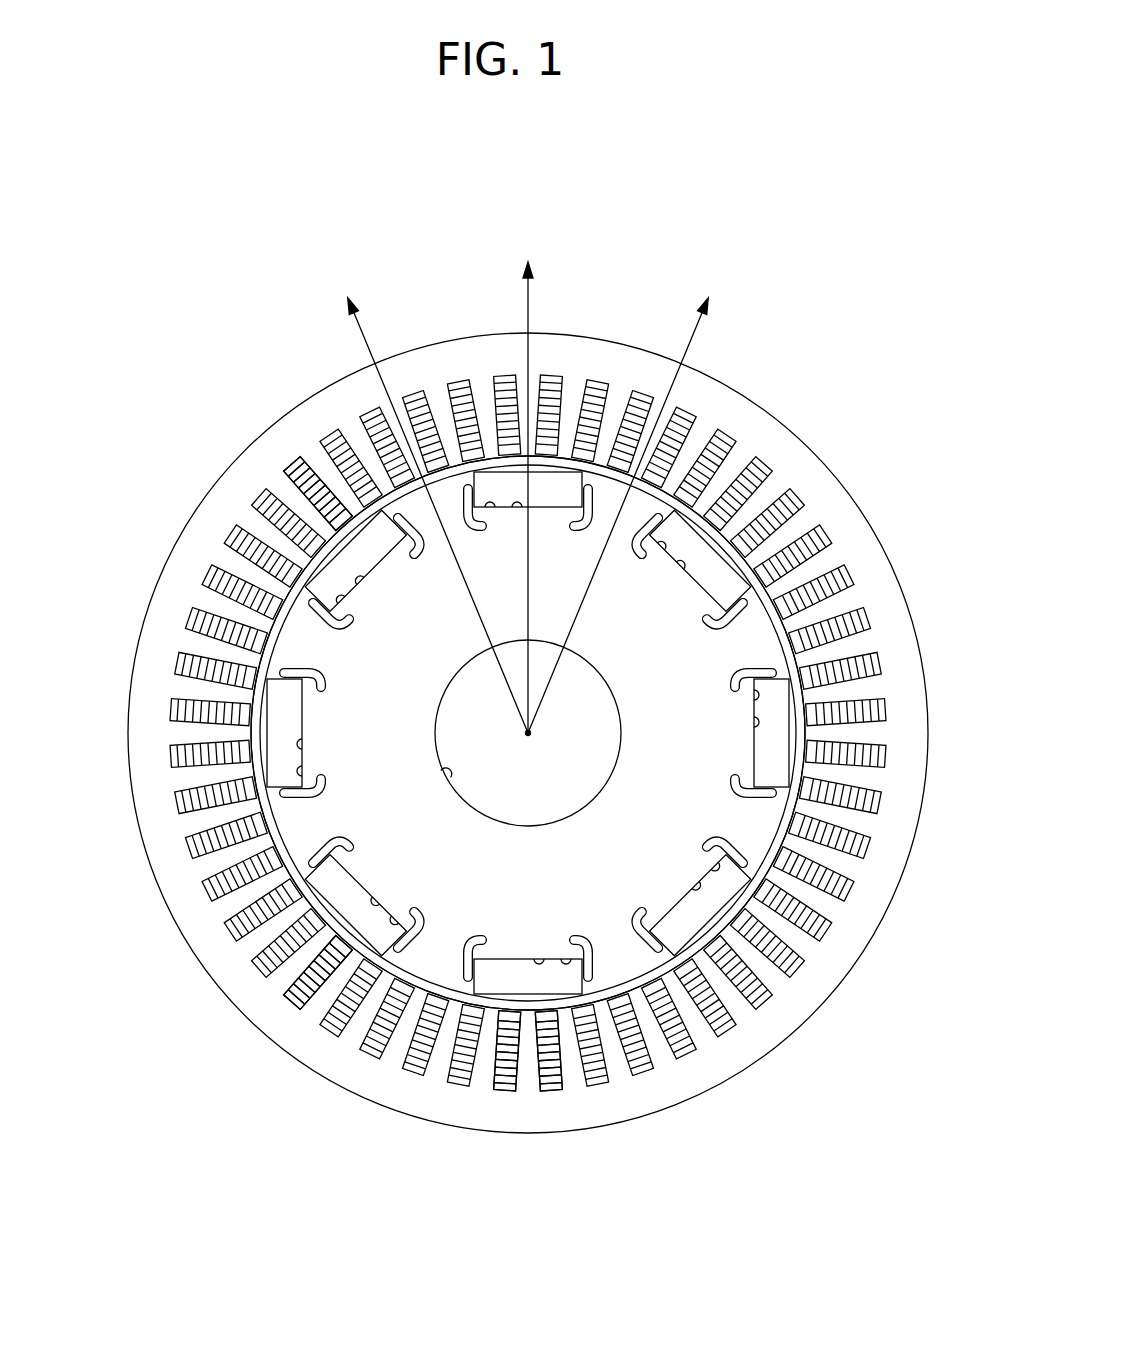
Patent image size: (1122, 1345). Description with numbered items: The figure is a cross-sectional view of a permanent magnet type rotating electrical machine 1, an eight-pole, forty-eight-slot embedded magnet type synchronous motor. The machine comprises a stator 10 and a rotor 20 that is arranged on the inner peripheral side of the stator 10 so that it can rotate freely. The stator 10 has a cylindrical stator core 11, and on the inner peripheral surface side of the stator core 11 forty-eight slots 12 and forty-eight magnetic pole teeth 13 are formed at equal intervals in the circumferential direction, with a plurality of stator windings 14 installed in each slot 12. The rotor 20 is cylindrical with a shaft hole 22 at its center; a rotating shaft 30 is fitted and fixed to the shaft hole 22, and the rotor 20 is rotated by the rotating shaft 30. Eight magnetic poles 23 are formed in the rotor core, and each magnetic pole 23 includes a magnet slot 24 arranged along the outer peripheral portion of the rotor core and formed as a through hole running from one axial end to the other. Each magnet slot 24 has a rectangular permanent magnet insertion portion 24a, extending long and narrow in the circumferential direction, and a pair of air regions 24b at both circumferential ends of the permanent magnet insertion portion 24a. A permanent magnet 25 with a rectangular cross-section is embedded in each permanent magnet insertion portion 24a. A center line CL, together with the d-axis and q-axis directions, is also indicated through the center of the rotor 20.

The permanent magnet type rotating electrical machine 1 is at (858, 300).
The stator 10 is at (770, 403).
The stator core 11 is at (795, 455).
The slot 12 is at (576, 1090).
The magnetic pole tooth 13 is at (292, 1002).
The stator winding 14 is at (292, 464).
The rotor 20 is at (491, 451).
The shaft hole 22 is at (446, 775).
The magnetic pole 23 is at (565, 450).
The magnet slot 24 is at (478, 516).
The permanent magnet insertion portion 24a is at (491, 509).
The air region 24b is at (437, 466).
The permanent magnet 25 is at (553, 500).
The rotating shaft 30 is at (572, 809).
The center line CL is at (531, 736).